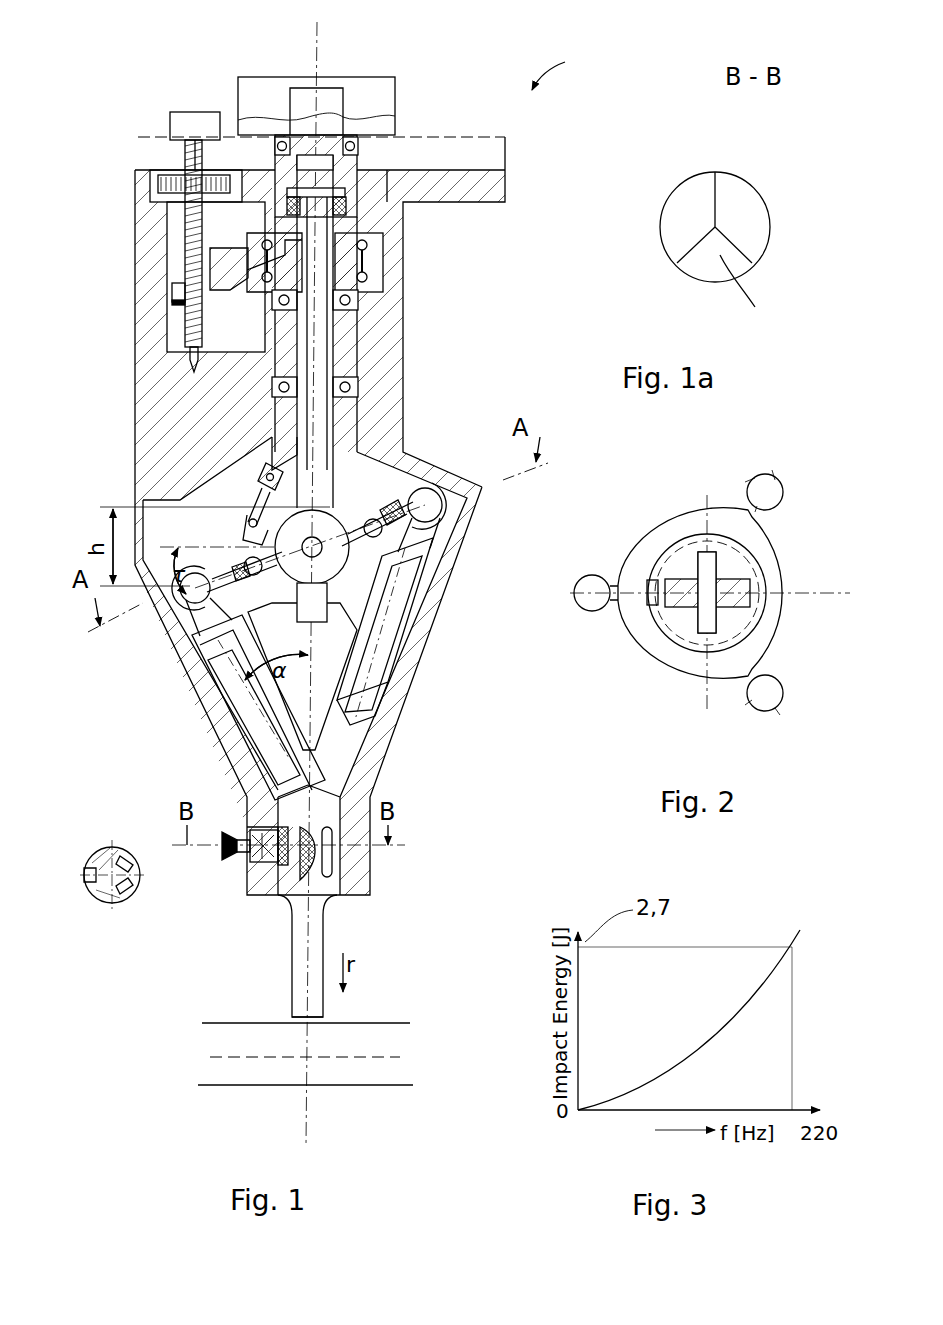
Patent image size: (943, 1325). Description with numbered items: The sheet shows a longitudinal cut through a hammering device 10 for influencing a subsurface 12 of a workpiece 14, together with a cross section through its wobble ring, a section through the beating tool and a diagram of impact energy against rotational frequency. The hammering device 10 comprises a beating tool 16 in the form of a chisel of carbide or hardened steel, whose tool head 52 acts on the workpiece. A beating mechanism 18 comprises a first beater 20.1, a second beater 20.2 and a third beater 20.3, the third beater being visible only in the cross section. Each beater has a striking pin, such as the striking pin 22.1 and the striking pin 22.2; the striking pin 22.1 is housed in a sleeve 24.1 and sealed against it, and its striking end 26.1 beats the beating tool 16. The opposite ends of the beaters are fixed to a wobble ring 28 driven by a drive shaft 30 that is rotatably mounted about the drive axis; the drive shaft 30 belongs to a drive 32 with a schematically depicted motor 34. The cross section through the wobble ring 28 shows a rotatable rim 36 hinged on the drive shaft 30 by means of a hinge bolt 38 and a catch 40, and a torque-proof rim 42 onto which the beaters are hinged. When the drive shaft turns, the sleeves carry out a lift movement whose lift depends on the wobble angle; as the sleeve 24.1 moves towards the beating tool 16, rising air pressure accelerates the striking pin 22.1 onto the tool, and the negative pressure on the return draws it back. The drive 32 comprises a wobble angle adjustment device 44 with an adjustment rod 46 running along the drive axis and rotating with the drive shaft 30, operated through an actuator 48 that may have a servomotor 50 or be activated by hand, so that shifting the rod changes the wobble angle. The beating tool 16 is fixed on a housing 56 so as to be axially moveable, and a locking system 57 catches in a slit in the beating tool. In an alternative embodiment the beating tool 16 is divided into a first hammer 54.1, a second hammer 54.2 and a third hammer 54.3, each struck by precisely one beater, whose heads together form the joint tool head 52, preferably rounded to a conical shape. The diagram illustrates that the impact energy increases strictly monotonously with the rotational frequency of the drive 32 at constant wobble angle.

In FIG. 1, the hammering device 10 is at (566, 64).
In FIG. 1, the subsurface 12 is at (258, 1042).
In FIG. 1, the workpiece 14 is at (158, 1057).
In FIG. 1, the beating tool 16 is at (300, 937).
In FIG. 1A, the beating tool 16 is at (742, 173).
In FIG. 1, the beating mechanism 18 is at (95, 679).
In FIG. 1, the first beater 20.1 is at (442, 520).
In FIG. 2, the first beater 20.1 is at (760, 478).
In FIG. 1, the second beater 20.2 is at (195, 668).
In FIG. 2, the second beater 20.2 is at (757, 708).
In FIG. 2, the third beater 20.3 is at (596, 612).
In FIG. 1, the striking pin 22.1 is at (398, 606).
In FIG. 1, the striking pin 22.2 is at (240, 697).
In FIG. 1, the sleeve 24.1 is at (403, 642).
In FIG. 1, the striking end 26.1 is at (340, 727).
In FIG. 1, the wobble ring 28 is at (392, 500).
In FIG. 2, the wobble ring 28 is at (782, 530).
In FIG. 1, the drive shaft 30 is at (325, 422).
In FIG. 1, the drive 32 is at (112, 362).
In FIG. 1, the motor 34 is at (375, 104).
In FIG. 2, the rotatable rim 36 is at (730, 628).
In FIG. 2, the hinge bolt 38 is at (705, 552).
In FIG. 2, the catch 40 is at (680, 583).
In FIG. 2, the torque-proof rim 42 is at (768, 585).
In FIG. 1, the wobble angle adjustment device 44 is at (283, 415).
In FIG. 1, the adjustment rod 46 is at (262, 460).
In FIG. 1, the actuator 48 is at (133, 272).
In FIG. 1, the servomotor 50 is at (193, 125).
In FIG. 1, the tool head 52 is at (315, 1032).
In FIG. 1A, the first hammer 54.1 is at (748, 212).
In FIG. 1A, the second hammer 54.2 is at (688, 208).
In FIG. 1A, the third hammer 54.3 is at (742, 303).
In FIG. 1, the housing 56 is at (380, 318).
In FIG. 1, the locking system 57 is at (222, 862).